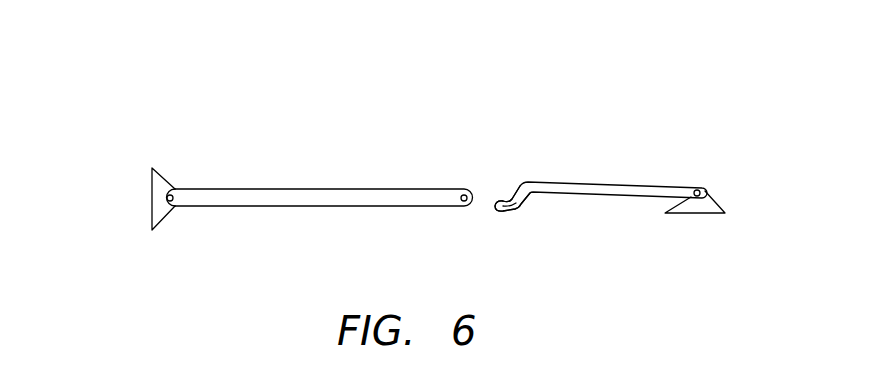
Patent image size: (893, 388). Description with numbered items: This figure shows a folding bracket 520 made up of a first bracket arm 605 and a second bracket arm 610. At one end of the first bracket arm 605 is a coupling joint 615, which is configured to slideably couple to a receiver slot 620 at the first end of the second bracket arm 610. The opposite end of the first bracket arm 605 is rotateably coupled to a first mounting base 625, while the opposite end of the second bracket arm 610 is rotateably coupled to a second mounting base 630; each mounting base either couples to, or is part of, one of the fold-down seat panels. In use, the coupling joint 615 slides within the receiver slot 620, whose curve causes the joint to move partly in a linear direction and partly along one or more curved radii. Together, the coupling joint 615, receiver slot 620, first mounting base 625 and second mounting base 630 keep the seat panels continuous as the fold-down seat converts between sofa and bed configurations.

The folding bracket 520 is at (680, 80).
The first bracket arm 605 is at (317, 205).
The second bracket arm 610 is at (602, 185).
The coupling joint 615 is at (459, 203).
The receiver slot 620 is at (517, 200).
The first mounting base 625 is at (155, 214).
The second mounting base 630 is at (682, 215).